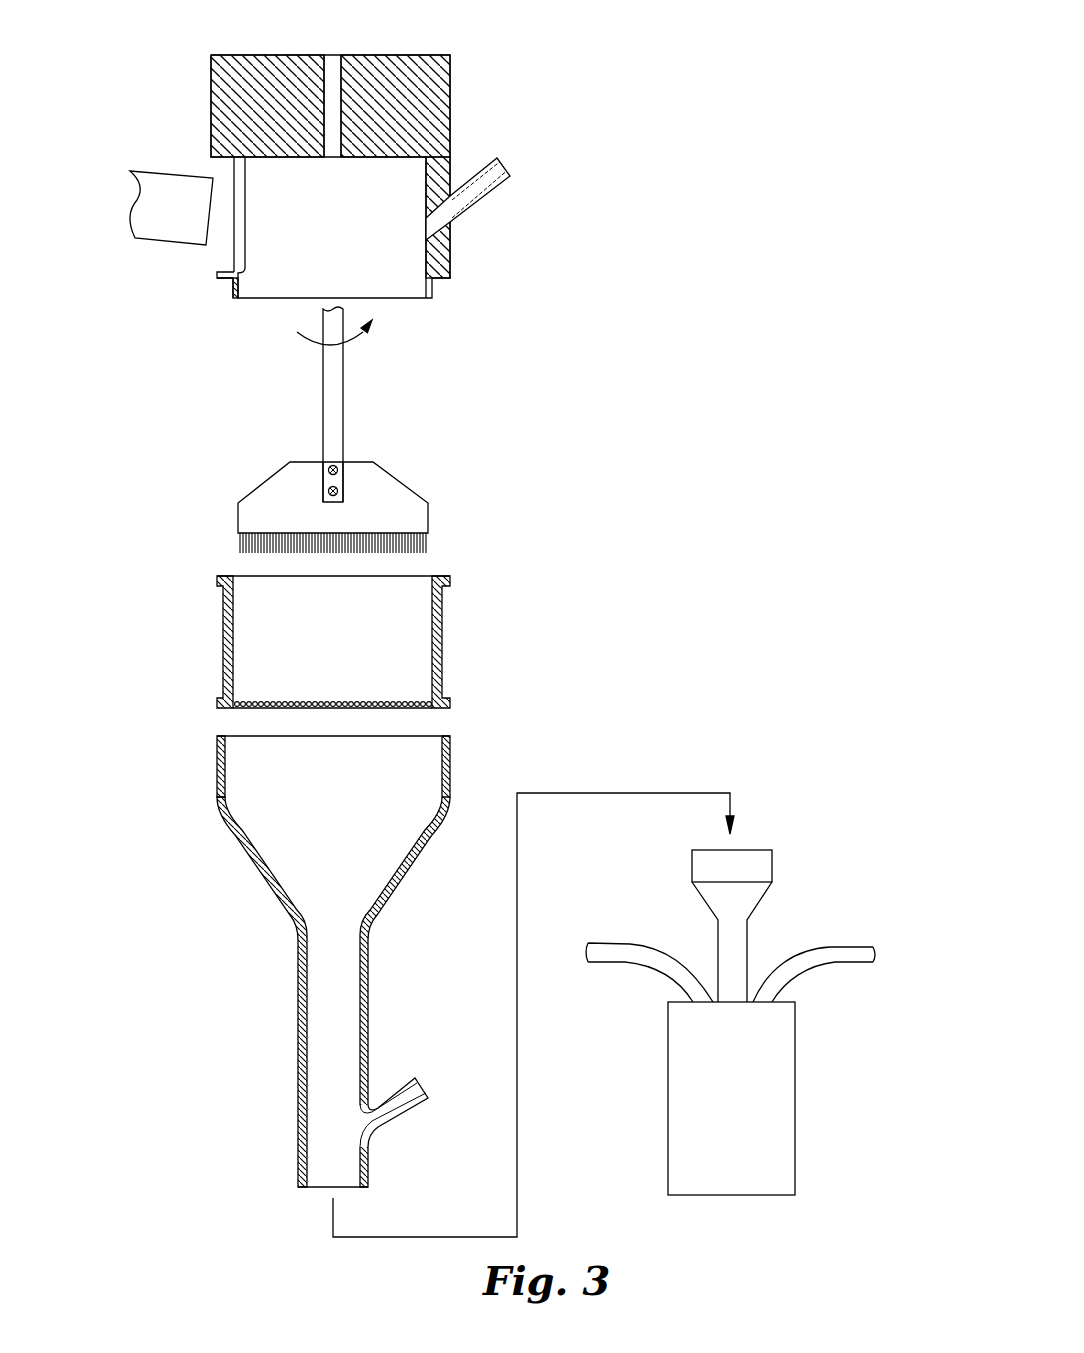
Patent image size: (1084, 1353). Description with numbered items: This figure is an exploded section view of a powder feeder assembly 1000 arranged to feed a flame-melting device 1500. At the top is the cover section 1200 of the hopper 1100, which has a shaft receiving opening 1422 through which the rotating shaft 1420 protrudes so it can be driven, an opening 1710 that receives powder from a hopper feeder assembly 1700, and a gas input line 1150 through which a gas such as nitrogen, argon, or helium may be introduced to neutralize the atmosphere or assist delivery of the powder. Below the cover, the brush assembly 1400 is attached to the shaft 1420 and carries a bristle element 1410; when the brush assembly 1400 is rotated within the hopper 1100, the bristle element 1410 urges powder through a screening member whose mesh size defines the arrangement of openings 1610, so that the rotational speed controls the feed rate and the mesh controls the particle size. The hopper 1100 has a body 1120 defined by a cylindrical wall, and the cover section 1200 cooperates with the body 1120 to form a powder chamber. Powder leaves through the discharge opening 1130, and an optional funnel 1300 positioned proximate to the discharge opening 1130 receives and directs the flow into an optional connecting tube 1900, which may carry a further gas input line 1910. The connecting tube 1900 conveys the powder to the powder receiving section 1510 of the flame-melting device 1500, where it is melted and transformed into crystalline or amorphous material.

The powder feeder assembly 1000 is at (478, 32).
The cover section 1200 is at (357, 151).
The shaft receiving opening 1422 is at (333, 62).
The gas input line 1150 is at (493, 193).
The hopper feeder assembly 1700 is at (167, 183).
The opening 1710 is at (225, 258).
The rotating shaft 1420 is at (335, 418).
The brush assembly 1400 is at (381, 510).
The bristle element 1410 is at (430, 545).
The hopper 1100 is at (338, 642).
The body 1120 is at (440, 635).
The openings 1610 is at (338, 700).
The discharge opening 1130 is at (233, 759).
The funnel 1300 is at (312, 961).
The connecting tube 1900 is at (298, 1010).
The gas input line 1910 is at (397, 1120).
The powder receiving section 1510 is at (765, 870).
The flame-melting device 1500 is at (806, 1050).